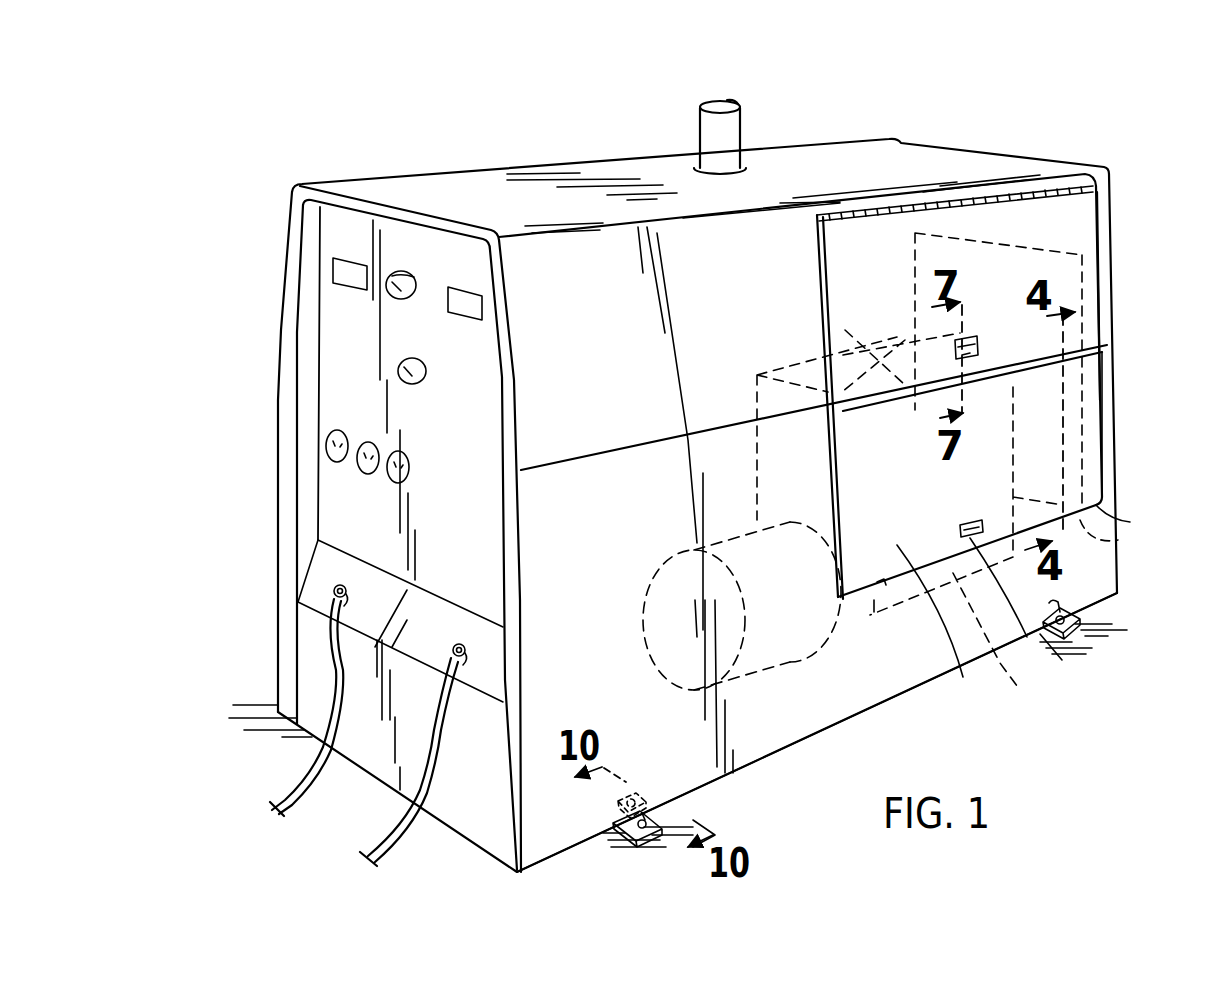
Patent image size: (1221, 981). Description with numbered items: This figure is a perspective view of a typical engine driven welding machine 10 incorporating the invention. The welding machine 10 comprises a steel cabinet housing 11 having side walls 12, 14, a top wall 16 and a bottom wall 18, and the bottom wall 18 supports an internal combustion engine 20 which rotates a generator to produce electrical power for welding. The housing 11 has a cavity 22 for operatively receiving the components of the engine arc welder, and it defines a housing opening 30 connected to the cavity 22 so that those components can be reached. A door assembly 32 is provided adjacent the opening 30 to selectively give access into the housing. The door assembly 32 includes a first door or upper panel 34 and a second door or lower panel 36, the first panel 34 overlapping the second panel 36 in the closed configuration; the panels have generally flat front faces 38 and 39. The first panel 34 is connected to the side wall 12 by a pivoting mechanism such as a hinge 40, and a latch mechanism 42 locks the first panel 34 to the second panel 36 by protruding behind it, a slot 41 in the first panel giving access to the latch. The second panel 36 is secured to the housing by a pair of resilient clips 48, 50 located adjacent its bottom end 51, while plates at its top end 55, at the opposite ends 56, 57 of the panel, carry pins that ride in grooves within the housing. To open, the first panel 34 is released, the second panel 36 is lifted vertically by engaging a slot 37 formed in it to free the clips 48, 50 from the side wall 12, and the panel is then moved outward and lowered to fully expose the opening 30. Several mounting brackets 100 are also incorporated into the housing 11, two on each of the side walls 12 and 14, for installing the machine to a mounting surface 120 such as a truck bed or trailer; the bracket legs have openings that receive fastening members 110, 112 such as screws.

The engine driven welding machine 10 is at (536, 148).
The housing 11 is at (800, 730).
The side wall 12 is at (853, 688).
The side wall 14 is at (278, 548).
The top wall 16 is at (470, 196).
The bottom wall 18 is at (464, 836).
The internal combustion engine 20 is at (1008, 668).
The cavity 22 is at (788, 185).
The housing opening 30 is at (880, 240).
The door assembly 32 is at (1102, 280).
The first door or upper panel 34 is at (1088, 228).
The second door or lower panel 36 is at (1102, 440).
The slot 37 is at (1066, 661).
The front face 38 is at (1037, 215).
The front face 39 is at (939, 628).
The hinge 40 is at (972, 200).
The slot 41 is at (1107, 333).
The latch mechanism 42 is at (955, 350).
The resilient clip 48 is at (920, 593).
The resilient clip 50 is at (1118, 541).
The bottom end 51 is at (1128, 522).
The top end 55 is at (830, 350).
The end of panel 56 is at (835, 482).
The end of panel 57 is at (1104, 407).
The mounting bracket 100 is at (637, 833).
The fastening member 110 is at (647, 812).
The fastening member 112 is at (637, 790).
The mounting surface 120 is at (690, 812).